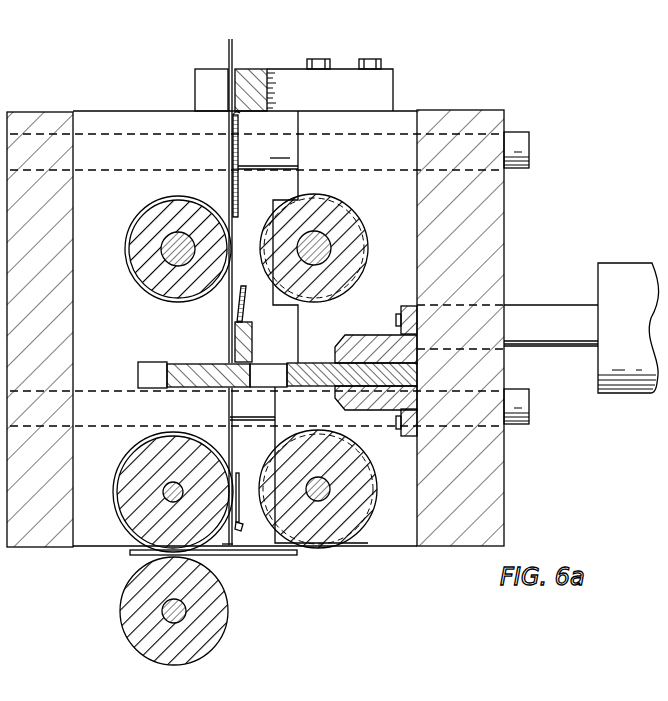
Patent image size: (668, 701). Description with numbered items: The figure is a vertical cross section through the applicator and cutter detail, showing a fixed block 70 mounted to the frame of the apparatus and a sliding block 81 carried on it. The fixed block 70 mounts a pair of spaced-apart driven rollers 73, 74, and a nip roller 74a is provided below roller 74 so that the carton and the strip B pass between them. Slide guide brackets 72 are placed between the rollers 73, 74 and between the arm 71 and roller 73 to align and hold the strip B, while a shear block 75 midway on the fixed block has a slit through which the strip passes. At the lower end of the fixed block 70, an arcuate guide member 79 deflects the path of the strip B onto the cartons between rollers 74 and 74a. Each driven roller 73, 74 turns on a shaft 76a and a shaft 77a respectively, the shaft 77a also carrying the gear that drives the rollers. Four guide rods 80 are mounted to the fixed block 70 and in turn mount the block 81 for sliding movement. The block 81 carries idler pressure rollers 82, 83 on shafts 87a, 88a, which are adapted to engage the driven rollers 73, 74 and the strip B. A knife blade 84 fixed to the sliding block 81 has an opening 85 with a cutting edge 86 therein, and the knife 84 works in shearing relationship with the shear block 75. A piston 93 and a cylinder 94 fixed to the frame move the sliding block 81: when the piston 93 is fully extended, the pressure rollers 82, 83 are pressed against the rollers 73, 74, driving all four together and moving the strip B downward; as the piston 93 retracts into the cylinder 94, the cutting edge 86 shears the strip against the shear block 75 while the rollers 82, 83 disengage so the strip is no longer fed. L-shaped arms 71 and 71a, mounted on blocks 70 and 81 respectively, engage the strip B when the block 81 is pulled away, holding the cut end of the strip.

The fixed block 70 is at (80, 88).
The L-shaped arm 71 is at (254, 69).
The L-shaped arm 71a is at (207, 87).
The slide guide bracket 72 is at (238, 198).
The driven roller 73 is at (151, 224).
The driven roller 74 is at (127, 486).
The nip roller 74a is at (151, 632).
The shear block 75 is at (247, 333).
The shaft 76a is at (144, 290).
The shaft 77a is at (171, 487).
The arcuate guide member 79 is at (242, 531).
The guide rod 80 is at (522, 152).
The sliding block 81 is at (399, 111).
The idler pressure roller 82 is at (355, 231).
The idler pressure roller 83 is at (368, 500).
The knife blade 84 is at (183, 372).
The opening 85 is at (281, 363).
The cutting edge 86 is at (267, 372).
The shaft 87a is at (332, 258).
The shaft 88a is at (333, 488).
The piston 93 is at (572, 312).
The cylinder 94 is at (632, 276).
The strip B is at (228, 50).